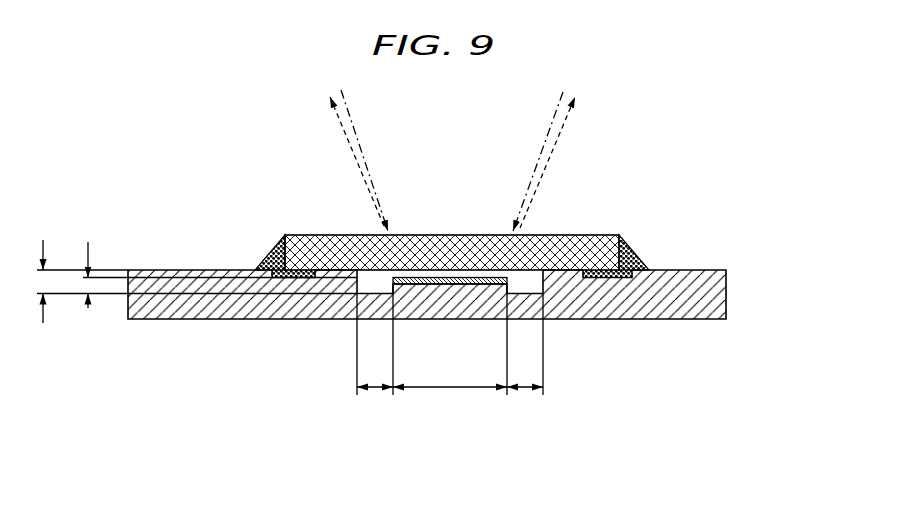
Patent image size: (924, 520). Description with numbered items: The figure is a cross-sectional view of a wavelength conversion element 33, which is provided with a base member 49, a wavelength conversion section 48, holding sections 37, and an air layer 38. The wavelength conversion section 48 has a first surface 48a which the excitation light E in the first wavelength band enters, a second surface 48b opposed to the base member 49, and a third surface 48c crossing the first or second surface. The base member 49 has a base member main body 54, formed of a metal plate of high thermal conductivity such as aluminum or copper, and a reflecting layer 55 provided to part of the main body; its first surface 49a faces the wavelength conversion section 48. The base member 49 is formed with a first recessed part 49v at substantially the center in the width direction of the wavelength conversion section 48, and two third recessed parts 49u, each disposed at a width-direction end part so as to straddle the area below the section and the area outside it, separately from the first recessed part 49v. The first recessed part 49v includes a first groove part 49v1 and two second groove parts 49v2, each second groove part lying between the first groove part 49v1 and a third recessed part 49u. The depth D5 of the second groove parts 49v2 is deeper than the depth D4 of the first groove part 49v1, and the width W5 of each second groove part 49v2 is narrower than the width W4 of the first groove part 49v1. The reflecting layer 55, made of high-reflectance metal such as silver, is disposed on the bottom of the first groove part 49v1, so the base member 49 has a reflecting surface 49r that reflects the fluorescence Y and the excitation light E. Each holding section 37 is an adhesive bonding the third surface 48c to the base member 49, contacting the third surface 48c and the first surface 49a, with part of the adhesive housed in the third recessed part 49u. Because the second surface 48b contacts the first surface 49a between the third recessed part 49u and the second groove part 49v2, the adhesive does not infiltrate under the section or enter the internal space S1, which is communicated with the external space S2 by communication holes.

The wavelength conversion element 33 is at (295, 186).
The holding section 37 is at (262, 257).
The air layer 38 is at (390, 270).
The wavelength conversion section 48 is at (318, 245).
The first surface 48a is at (586, 235).
The second surface 48b is at (577, 272).
The third surface 48c is at (283, 242).
The base member 49 is at (731, 298).
The first surface 49a is at (170, 270).
The reflecting surface 49r is at (452, 280).
The third recessed part 49u is at (300, 272).
The first recessed part 49v is at (578, 435).
The first groove part 49v1 is at (490, 286).
The second groove part 49v2 is at (390, 289).
The base member main body 54 is at (195, 305).
The reflecting layer 55 is at (430, 278).
The internal space S1 is at (502, 233).
The external space S2 is at (202, 137).
The excitation light E is at (527, 176).
The fluorescence Y is at (550, 178).
The depth D4 is at (214, 260).
The depth D5 is at (193, 267).
The width W4 is at (450, 339).
The width W5 is at (450, 345).